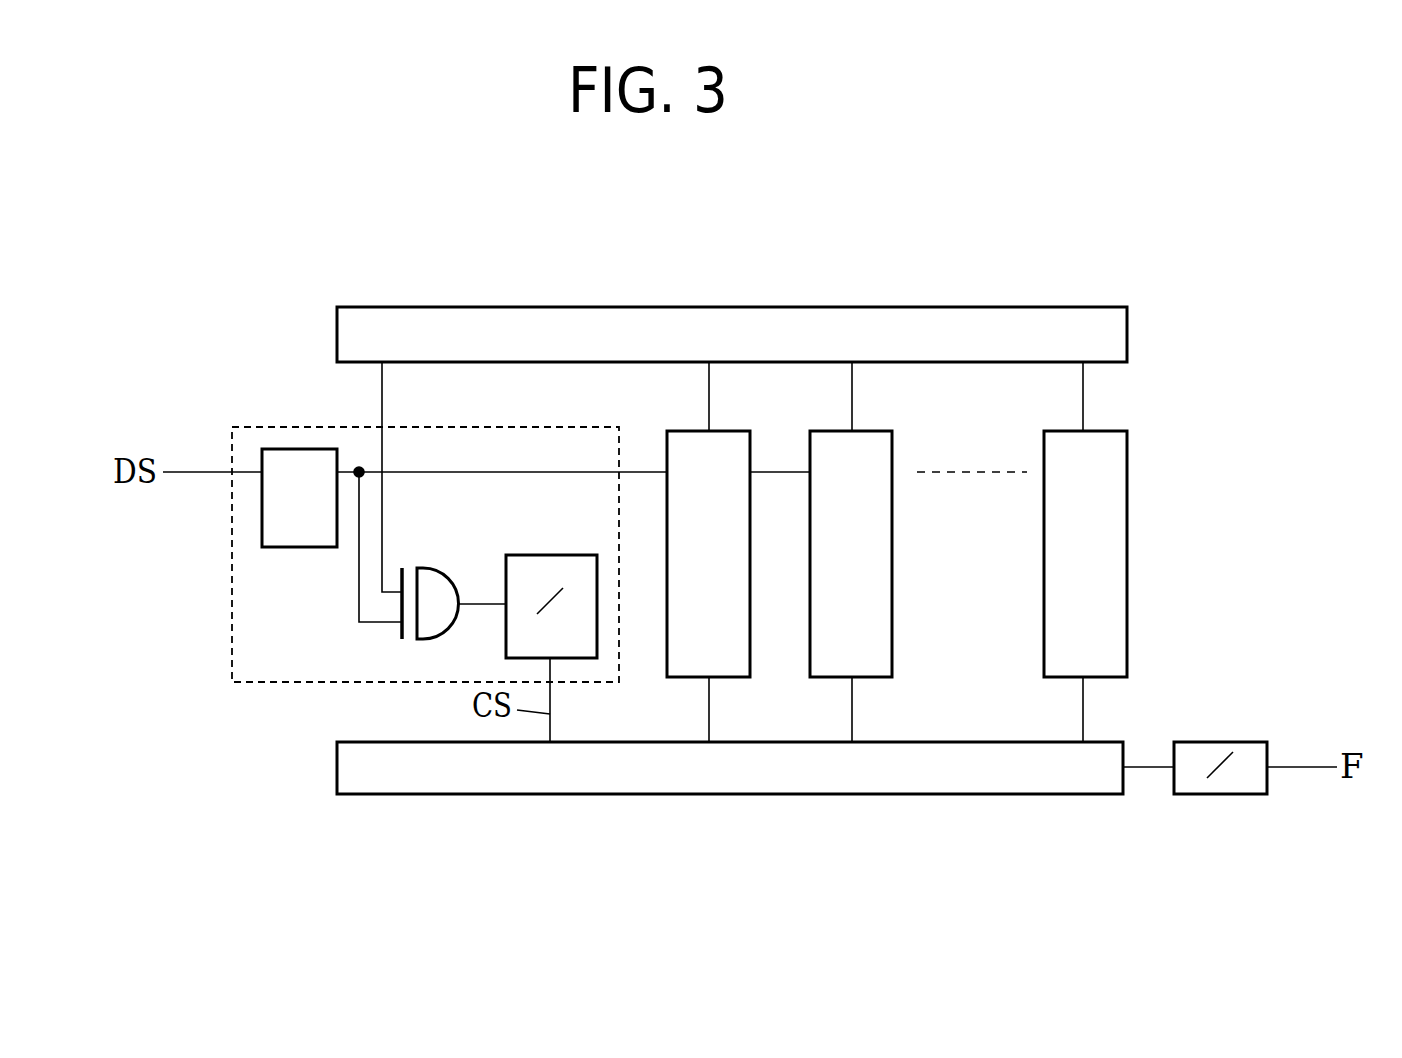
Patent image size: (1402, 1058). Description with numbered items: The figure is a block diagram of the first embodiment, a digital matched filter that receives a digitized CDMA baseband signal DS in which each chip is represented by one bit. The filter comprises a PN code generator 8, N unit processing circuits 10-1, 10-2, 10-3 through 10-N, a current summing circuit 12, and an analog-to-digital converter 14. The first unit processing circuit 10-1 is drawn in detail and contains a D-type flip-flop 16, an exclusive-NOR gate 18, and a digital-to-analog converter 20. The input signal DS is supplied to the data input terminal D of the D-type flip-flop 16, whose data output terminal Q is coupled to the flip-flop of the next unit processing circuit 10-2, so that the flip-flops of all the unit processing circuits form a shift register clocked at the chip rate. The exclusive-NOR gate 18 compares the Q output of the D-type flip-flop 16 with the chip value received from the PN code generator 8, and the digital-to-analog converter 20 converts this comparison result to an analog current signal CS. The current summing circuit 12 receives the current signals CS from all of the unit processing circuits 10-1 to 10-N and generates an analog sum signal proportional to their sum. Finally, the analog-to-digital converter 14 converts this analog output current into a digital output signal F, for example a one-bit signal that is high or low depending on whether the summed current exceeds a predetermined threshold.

The PN code generator 8 is at (945, 307).
The first unit processing circuit 10-1 is at (227, 638).
The second unit processing circuit 10-2 is at (733, 678).
The third unit processing circuit 10-3 is at (865, 677).
The Nth unit processing circuit 10-N is at (1103, 678).
The current summing circuit 12 is at (721, 795).
The analog-to-digital (A/D) converter 14 is at (1218, 794).
The D-type flip-flop 16 is at (296, 548).
The exclusive-NOR gate 18 is at (438, 568).
The digital-to-analog (D/A) converter 20 is at (545, 555).